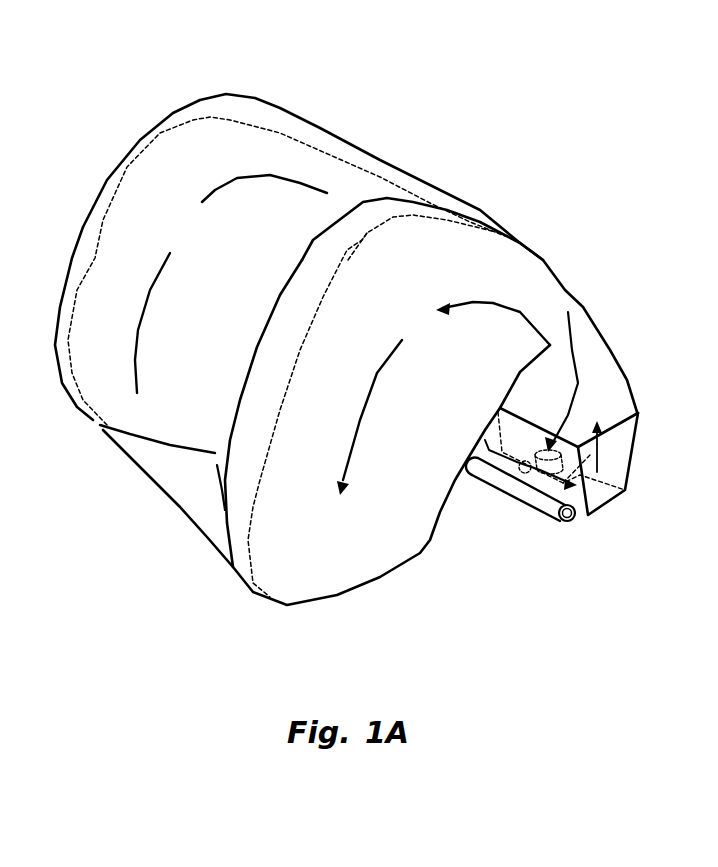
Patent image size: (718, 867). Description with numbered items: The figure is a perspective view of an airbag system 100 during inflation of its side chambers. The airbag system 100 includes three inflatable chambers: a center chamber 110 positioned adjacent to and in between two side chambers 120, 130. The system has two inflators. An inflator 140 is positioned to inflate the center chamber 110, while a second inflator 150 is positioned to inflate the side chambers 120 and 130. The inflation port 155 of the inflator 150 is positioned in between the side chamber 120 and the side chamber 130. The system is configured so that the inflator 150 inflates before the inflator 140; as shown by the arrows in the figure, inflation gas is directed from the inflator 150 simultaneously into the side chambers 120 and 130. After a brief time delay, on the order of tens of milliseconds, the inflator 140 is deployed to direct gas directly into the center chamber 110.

The airbag system 100 is at (497, 138).
The center chamber 110 is at (187, 485).
The side chamber 120 is at (167, 153).
The side chamber 130 is at (365, 568).
The inflator 140 is at (560, 410).
The inflator 150 is at (541, 524).
The inflation port 155 is at (522, 470).